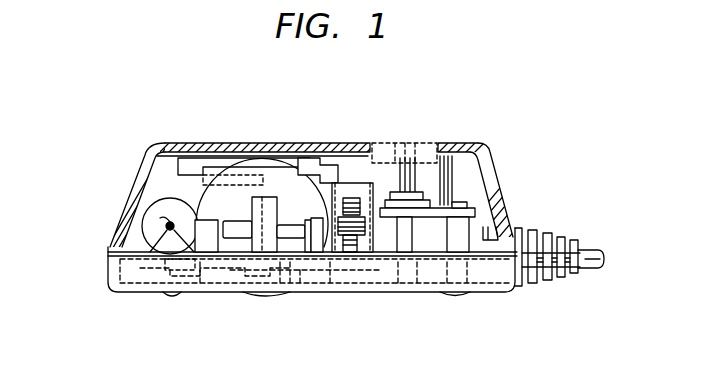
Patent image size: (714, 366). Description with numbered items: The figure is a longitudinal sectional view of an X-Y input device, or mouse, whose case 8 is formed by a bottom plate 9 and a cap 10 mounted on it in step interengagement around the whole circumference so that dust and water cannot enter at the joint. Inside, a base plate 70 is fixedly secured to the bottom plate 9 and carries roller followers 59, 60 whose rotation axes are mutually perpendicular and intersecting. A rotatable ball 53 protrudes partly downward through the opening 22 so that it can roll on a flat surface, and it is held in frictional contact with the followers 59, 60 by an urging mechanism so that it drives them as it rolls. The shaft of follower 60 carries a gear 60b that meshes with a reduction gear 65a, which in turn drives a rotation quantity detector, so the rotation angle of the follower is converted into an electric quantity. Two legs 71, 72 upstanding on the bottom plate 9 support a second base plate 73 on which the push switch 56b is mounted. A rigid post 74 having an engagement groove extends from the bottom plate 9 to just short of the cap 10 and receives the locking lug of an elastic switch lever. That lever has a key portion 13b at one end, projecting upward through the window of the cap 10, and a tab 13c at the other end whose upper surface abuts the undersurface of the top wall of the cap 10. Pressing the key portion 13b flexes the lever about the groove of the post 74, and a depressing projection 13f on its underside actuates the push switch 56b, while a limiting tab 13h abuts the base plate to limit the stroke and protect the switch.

The case 8 is at (508, 219).
The bottom plate 9 is at (120, 288).
The cap 10 is at (296, 143).
The key portion 13b is at (418, 162).
The tab 13c is at (187, 156).
The depressing projection 13f is at (412, 172).
The limiting tab 13h is at (458, 192).
The opening 22 is at (314, 270).
The ball 53 is at (205, 197).
The push switch 56b is at (448, 177).
The roller follower 59 is at (143, 227).
The roller follower 60 is at (253, 243).
The gear 60b is at (347, 238).
The reduction gear 65a is at (356, 198).
The base plate 70 is at (180, 258).
The leg 71 is at (407, 245).
The leg 72 is at (457, 245).
The second base plate 73 is at (473, 220).
The post 74 is at (322, 170).